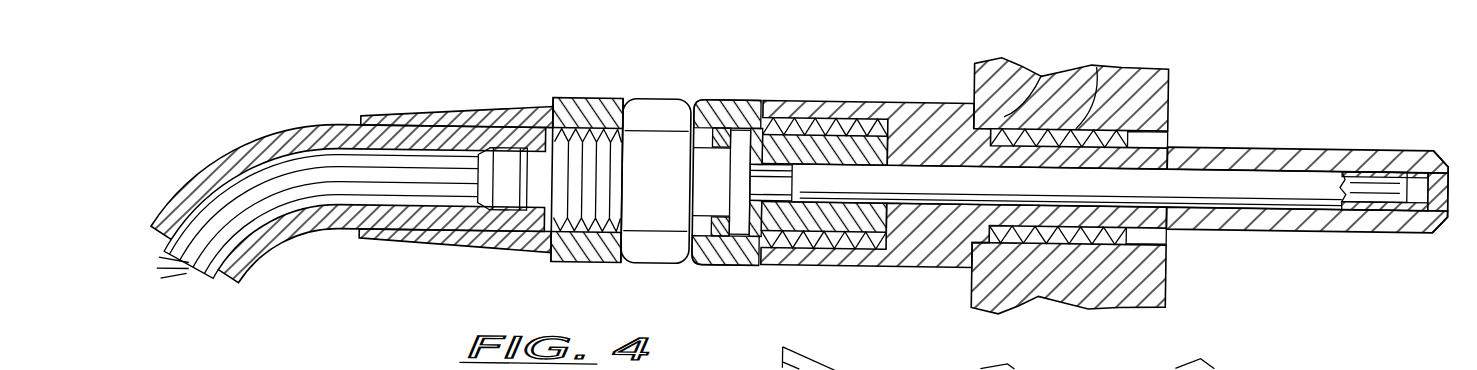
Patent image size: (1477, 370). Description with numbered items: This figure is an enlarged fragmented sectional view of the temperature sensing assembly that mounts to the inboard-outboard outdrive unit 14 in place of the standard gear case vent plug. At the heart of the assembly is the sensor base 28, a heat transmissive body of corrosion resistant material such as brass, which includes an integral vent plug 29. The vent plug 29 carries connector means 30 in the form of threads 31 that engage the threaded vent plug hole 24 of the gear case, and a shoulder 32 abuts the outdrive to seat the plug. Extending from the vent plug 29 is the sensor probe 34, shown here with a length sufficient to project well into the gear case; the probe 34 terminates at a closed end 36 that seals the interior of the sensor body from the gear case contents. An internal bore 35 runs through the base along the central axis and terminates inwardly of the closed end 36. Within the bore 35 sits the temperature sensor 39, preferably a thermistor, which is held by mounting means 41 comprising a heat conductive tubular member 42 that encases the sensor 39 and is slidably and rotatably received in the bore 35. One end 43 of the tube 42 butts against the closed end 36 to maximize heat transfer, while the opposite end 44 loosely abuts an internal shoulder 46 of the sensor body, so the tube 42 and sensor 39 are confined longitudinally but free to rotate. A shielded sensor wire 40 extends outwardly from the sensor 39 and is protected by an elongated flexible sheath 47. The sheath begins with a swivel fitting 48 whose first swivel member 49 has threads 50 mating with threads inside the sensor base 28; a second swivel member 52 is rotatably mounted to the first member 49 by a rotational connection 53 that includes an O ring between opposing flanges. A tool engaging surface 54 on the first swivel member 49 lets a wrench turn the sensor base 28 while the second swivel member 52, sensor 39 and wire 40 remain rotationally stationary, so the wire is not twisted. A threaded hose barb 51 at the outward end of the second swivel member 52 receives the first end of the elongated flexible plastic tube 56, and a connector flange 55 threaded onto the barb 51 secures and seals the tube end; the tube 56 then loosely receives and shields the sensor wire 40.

The inboard-outboard outdrive unit 14 is at (1190, 45).
The vent plug hole 24 is at (1162, 133).
The sensor base 28 is at (935, 280).
The vent plug 29 is at (1167, 229).
The connector means 30 is at (1057, 245).
The threads 31 is at (1106, 116).
The shoulder 32 is at (1048, 68).
The sensor probe 34 is at (1230, 146).
The internal bore 35 is at (1370, 192).
The closed end 36 is at (1450, 156).
The temperature sensor 39 is at (1370, 174).
The sensor wire 40 is at (170, 242).
The mounting means 41 is at (1257, 205).
The tubular member 42 is at (1292, 171).
The end of tube 43 is at (1450, 186).
The opposite end 44 is at (787, 165).
The internal shoulder 46 is at (768, 179).
The elongated flexible sheath 47 is at (300, 252).
The swivel fitting 48 is at (667, 77).
The first swivel member 49 is at (744, 105).
The threads 50 is at (830, 115).
The threaded hose barb 51 is at (507, 189).
The second swivel member 52 is at (643, 114).
The rotational connection 53 is at (717, 124).
The tool engaging surface 54 is at (727, 261).
The connector flange 55 is at (437, 117).
The elongated flexible plastic tube 56 is at (258, 163).